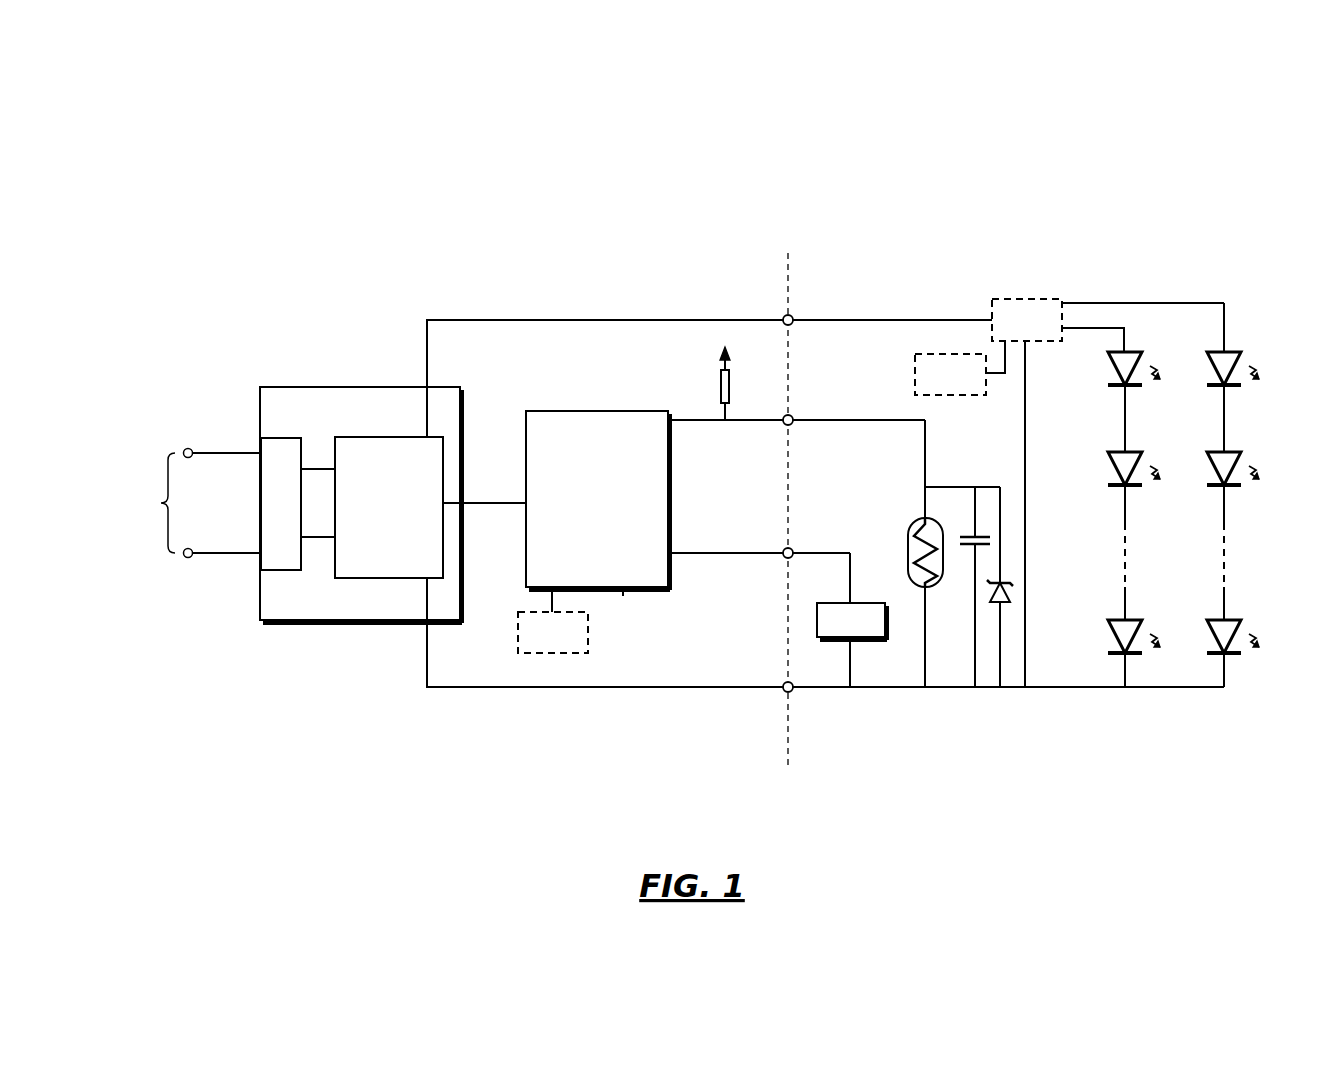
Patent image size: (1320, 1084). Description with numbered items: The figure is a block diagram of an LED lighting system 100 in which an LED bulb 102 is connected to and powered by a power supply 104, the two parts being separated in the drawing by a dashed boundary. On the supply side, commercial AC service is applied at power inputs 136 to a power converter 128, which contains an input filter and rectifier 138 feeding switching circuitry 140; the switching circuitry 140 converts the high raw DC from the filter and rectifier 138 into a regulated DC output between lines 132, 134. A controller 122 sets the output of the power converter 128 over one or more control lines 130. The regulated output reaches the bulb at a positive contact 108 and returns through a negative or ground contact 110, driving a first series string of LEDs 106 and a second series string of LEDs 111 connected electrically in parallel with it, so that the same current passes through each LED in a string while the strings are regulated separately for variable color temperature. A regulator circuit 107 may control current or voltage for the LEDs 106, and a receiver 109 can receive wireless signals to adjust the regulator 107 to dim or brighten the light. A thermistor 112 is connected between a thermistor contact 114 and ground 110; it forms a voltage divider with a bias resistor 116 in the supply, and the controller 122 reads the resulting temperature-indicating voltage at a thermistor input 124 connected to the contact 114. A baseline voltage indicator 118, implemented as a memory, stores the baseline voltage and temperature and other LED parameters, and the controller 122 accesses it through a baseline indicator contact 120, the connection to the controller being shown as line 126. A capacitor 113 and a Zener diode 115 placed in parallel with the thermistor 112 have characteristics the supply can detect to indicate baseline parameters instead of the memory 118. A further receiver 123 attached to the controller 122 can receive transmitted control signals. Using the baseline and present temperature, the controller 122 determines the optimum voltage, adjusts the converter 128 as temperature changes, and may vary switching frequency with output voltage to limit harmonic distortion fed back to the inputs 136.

The LED lighting system 100 is at (530, 135).
The LED bulb 102 is at (1016, 231).
The power supply 104 is at (649, 486).
The LEDs 106 is at (1142, 353).
The regulator circuit 107 is at (1058, 298).
The positive contact 108 is at (792, 325).
The receiver 109 is at (930, 354).
The negative contact 110 is at (790, 682).
The second series string of LEDs 111 is at (1241, 353).
The thermistor 112 is at (908, 545).
The capacitor 113 is at (968, 535).
The thermistor contact 114 is at (791, 426).
The Zener diode 115 is at (1005, 598).
The bias resistor 116 is at (720, 388).
The baseline voltage indicator 118 is at (887, 620).
The baseline indicator contact 120 is at (790, 548).
The controller 122 is at (620, 590).
The receiver 123 is at (588, 620).
The thermistor input 124 is at (672, 422).
The memory communication line 126 is at (680, 552).
The power converter 128 is at (297, 387).
The control lines 130 is at (512, 503).
The output line 132 is at (482, 320).
The output line 134 is at (460, 687).
The power inputs 136 is at (191, 503).
The input filter and rectifier 138 is at (284, 570).
The switching circuitry 140 is at (395, 578).